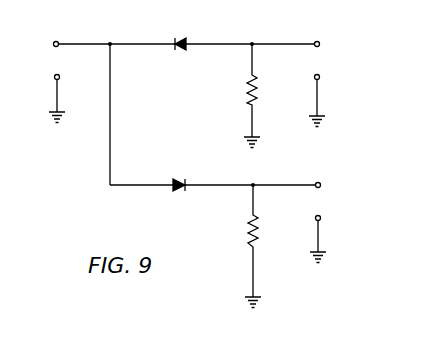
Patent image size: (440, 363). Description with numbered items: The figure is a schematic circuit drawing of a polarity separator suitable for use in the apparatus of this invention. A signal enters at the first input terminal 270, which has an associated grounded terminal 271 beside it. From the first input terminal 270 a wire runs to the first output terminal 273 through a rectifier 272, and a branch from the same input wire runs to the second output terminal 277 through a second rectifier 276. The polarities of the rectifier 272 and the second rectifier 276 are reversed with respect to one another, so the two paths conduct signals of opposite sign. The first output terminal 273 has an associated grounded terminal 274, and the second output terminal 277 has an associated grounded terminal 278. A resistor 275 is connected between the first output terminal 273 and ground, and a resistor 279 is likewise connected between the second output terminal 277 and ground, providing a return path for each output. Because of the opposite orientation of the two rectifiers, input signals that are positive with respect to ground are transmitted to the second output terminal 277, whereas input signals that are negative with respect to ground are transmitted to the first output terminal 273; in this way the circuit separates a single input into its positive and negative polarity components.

The first input terminal 270 is at (54, 43).
The grounded terminal 271 is at (54, 76).
The rectifier 272 is at (180, 40).
The first output terminal 273 is at (320, 43).
The grounded terminal 274 is at (320, 76).
The resistor 275 is at (249, 88).
The second rectifier 276 is at (178, 182).
The second output terminal 277 is at (320, 184).
The grounded terminal 278 is at (320, 217).
The resistor 279 is at (250, 224).